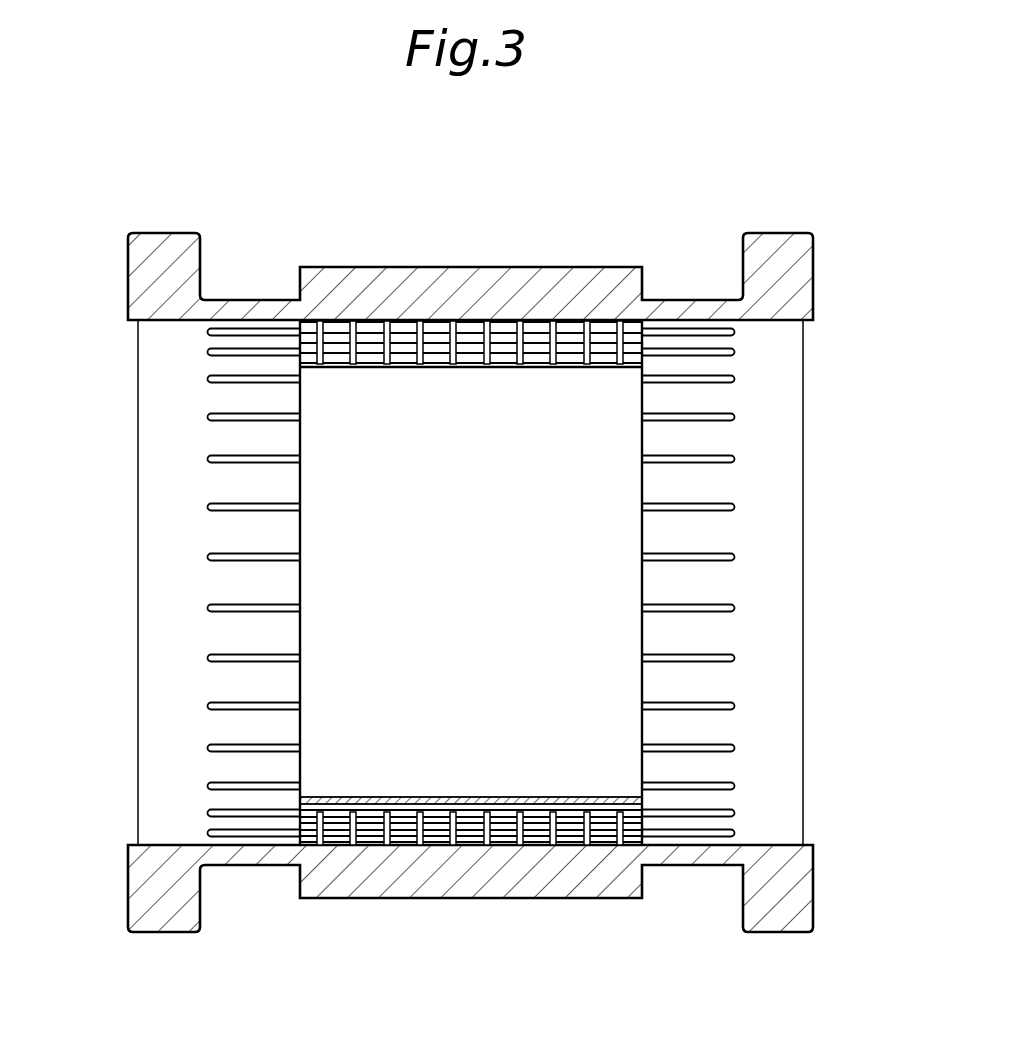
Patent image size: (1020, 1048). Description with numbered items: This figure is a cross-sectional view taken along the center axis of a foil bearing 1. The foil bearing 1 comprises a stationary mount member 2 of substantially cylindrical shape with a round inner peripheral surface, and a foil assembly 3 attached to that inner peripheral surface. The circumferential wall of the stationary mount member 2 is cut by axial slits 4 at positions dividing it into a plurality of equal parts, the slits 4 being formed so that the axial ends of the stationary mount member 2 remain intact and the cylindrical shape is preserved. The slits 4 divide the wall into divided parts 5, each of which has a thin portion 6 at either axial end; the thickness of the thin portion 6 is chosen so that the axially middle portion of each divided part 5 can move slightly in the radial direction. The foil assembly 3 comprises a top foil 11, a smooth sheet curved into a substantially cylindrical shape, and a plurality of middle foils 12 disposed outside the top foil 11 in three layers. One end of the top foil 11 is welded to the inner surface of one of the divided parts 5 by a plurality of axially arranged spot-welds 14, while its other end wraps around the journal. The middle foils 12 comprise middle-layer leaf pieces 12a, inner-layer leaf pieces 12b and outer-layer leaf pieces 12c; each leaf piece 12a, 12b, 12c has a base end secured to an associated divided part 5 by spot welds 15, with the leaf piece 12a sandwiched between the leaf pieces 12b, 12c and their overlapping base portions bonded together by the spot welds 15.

The foil bearing 1 is at (702, 242).
The stationary mount member 2 is at (808, 276).
The foil assembly 3 is at (642, 530).
The axial slits 4 is at (731, 659).
The divided parts 5 is at (218, 587).
The thin portion 6 is at (236, 868).
The top foil 11 is at (476, 800).
The middle foils 12 is at (471, 914).
The middle-layer leaf pieces 12a is at (369, 838).
The inner-layer leaf pieces 12b is at (406, 838).
The outer-layer leaf pieces 12c is at (352, 935).
The spot-welds 14 is at (388, 335).
The spot welds 15 is at (553, 842).